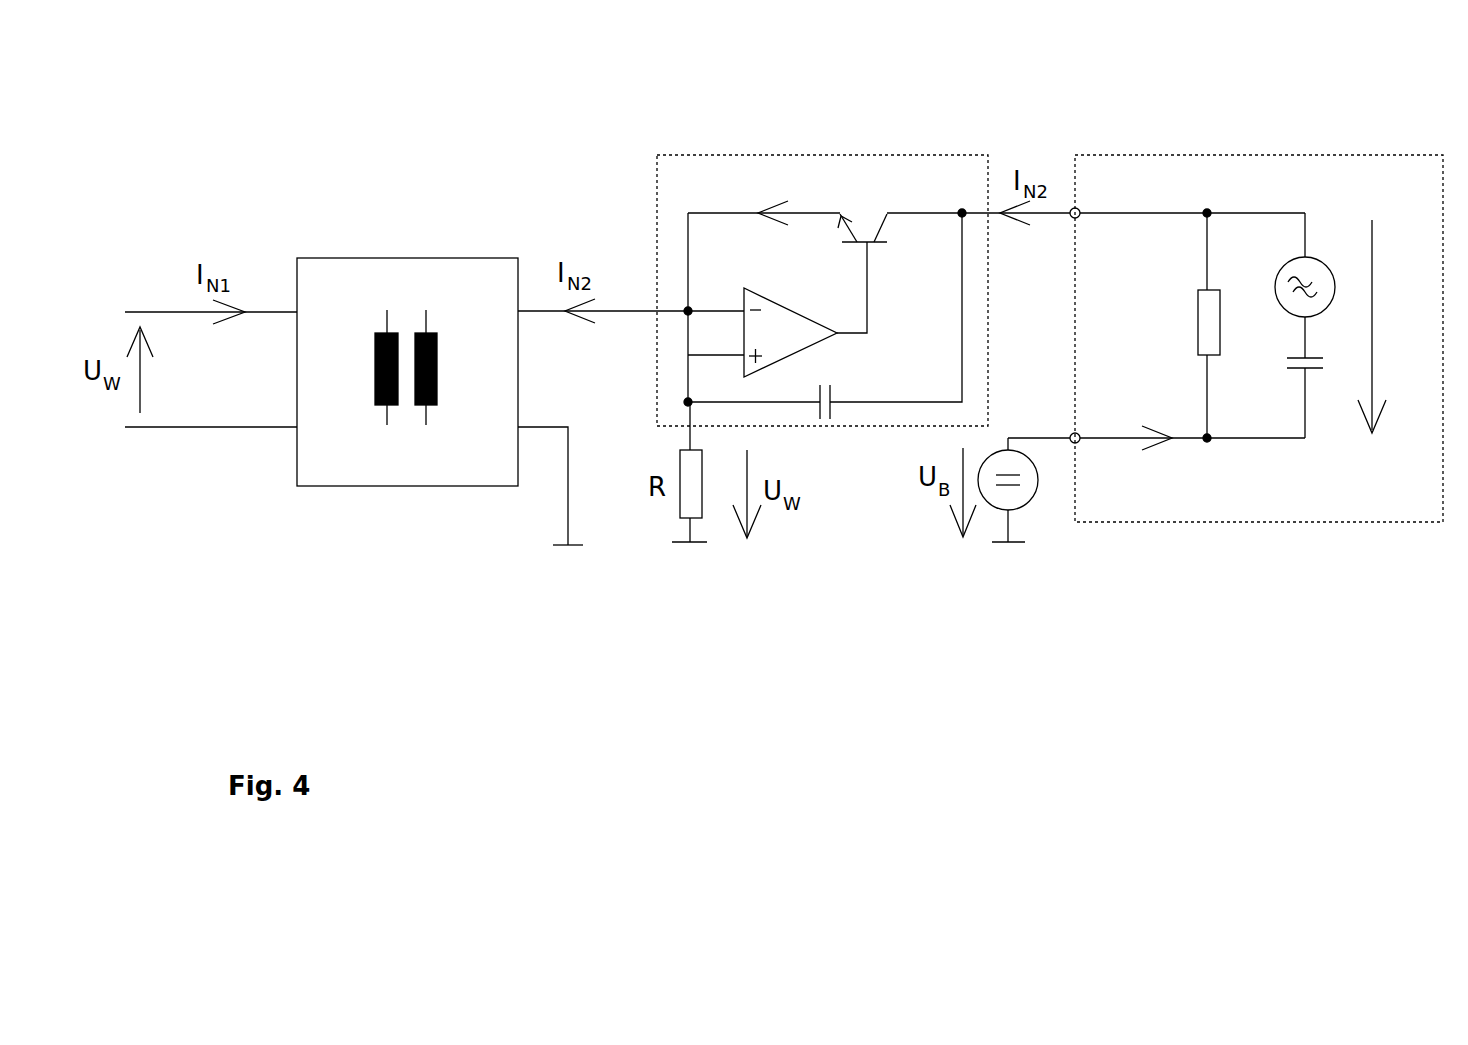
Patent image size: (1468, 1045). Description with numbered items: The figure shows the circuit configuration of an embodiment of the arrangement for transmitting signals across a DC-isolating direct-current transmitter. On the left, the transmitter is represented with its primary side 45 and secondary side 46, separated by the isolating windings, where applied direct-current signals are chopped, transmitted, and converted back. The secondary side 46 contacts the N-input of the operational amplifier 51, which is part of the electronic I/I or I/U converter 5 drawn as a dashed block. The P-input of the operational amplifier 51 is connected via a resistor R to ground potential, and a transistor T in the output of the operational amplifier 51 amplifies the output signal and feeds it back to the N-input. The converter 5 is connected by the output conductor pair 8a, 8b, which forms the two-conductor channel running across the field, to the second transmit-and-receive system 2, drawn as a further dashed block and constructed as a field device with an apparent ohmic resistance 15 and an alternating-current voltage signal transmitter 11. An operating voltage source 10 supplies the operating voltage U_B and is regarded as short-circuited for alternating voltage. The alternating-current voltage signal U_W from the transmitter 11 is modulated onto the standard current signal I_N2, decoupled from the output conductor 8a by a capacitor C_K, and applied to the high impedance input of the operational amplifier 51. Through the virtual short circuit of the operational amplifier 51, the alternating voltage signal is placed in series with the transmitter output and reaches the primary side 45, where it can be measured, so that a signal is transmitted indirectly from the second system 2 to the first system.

The second transmit-and-receive system 2 is at (1259, 371).
The electronic I/I or I/U converter 5 is at (866, 260).
The output conductor 8a is at (1072, 209).
The output conductor 8b is at (1047, 440).
The operating voltage source 10 is at (990, 505).
The alternating-current voltage signal transmitter 11 is at (1315, 258).
The apparent ohmic resistance 15 is at (1220, 325).
The primary side 45 is at (315, 378).
The secondary side 46 is at (497, 382).
The operational amplifier 51 is at (785, 305).